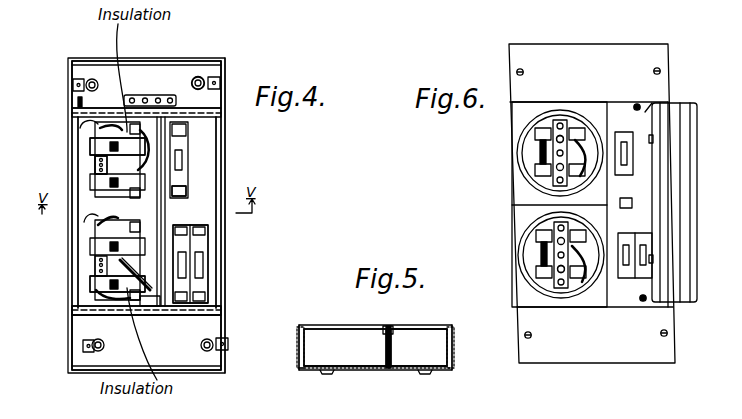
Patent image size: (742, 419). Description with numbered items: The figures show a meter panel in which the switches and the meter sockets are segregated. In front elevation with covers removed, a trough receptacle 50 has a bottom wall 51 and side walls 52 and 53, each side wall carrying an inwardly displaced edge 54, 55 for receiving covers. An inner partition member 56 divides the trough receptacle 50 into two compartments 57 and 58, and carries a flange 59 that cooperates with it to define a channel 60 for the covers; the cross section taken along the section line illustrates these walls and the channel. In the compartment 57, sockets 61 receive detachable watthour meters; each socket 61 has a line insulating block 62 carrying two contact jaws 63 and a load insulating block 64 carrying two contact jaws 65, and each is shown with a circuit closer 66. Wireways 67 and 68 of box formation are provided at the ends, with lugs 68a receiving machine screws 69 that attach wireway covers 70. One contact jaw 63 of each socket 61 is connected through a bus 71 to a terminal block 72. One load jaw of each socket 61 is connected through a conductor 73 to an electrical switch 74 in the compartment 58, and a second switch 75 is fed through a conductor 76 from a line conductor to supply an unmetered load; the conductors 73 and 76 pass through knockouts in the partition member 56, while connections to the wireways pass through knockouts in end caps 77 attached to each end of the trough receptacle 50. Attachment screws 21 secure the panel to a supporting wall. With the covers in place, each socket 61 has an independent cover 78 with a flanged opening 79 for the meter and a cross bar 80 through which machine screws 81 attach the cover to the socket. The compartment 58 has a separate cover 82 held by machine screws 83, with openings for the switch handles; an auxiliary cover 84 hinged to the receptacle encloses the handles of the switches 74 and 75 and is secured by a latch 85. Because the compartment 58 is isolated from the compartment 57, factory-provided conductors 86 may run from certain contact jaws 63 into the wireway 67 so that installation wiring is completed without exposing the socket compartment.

In FIG. 4, the attachment screws 21 is at (197, 78).
In FIG. 4, the trough receptacle 50 is at (225, 266).
In FIG. 5, the trough receptacle 50 is at (300, 360).
In FIG. 4, the bottom wall 51 is at (214, 193).
In FIG. 5, the bottom wall 51 is at (372, 368).
In FIG. 4, the side wall 52 is at (76, 238).
In FIG. 5, the side wall 52 is at (298, 345).
In FIG. 4, the side wall 53 is at (227, 136).
In FIG. 5, the side wall 53 is at (456, 343).
In FIG. 4, the inwardly displaced edge 54 is at (75, 186).
In FIG. 5, the inwardly displaced edge 54 is at (300, 325).
In FIG. 4, the inwardly displaced edge 55 is at (225, 185).
In FIG. 5, the inwardly displaced edge 55 is at (448, 328).
In FIG. 4, the inner partition member 56 is at (189, 148).
In FIG. 5, the inner partition member 56 is at (386, 345).
In FIG. 4, the compartment 57 is at (79, 144).
In FIG. 5, the compartment 57 is at (345, 357).
In FIG. 4, the compartment 58 is at (218, 257).
In FIG. 5, the compartment 58 is at (417, 357).
In FIG. 4, the flange 59 is at (213, 152).
In FIG. 5, the flange 59 is at (400, 330).
In FIG. 5, the channel 60 is at (389, 327).
In FIG. 4, the socket 61 is at (95, 158).
In FIG. 4, the line insulating block 62 is at (135, 130).
In FIG. 4, the contact jaws 63 is at (96, 250).
In FIG. 4, the load insulating block 64 is at (148, 292).
In FIG. 4, the contact jaws 65 is at (96, 283).
In FIG. 4, the circuit closer 66 is at (93, 167).
In FIG. 4, the wireway 67 is at (72, 70).
In FIG. 4, the wireway 68 is at (85, 328).
In FIG. 4, the lugs 68a is at (80, 78).
In FIG. 6, the machine screws 69 is at (516, 72).
In FIG. 6, the wireway covers 70 is at (591, 46).
In FIG. 4, the bus 71 is at (146, 152).
In FIG. 4, the terminal block 72 is at (158, 95).
In FIG. 4, the conductor 73 is at (186, 208).
In FIG. 4, the electrical switch 74 is at (186, 164).
In FIG. 4, the second switch 75 is at (222, 284).
In FIG. 4, the conductor 76 is at (155, 307).
In FIG. 4, the end caps 77 is at (75, 117).
In FIG. 6, the cover 78 is at (522, 120).
In FIG. 6, the flanged opening 79 is at (525, 160).
In FIG. 6, the cross bar 80 is at (572, 120).
In FIG. 6, the machine screws 81 is at (558, 118).
In FIG. 6, the cover 82 is at (652, 104).
In FIG. 6, the machine screws 83 is at (636, 104).
In FIG. 6, the auxiliary cover 84 is at (692, 213).
In FIG. 6, the latch 85 is at (626, 200).
In FIG. 4, the conductors 86 is at (77, 101).